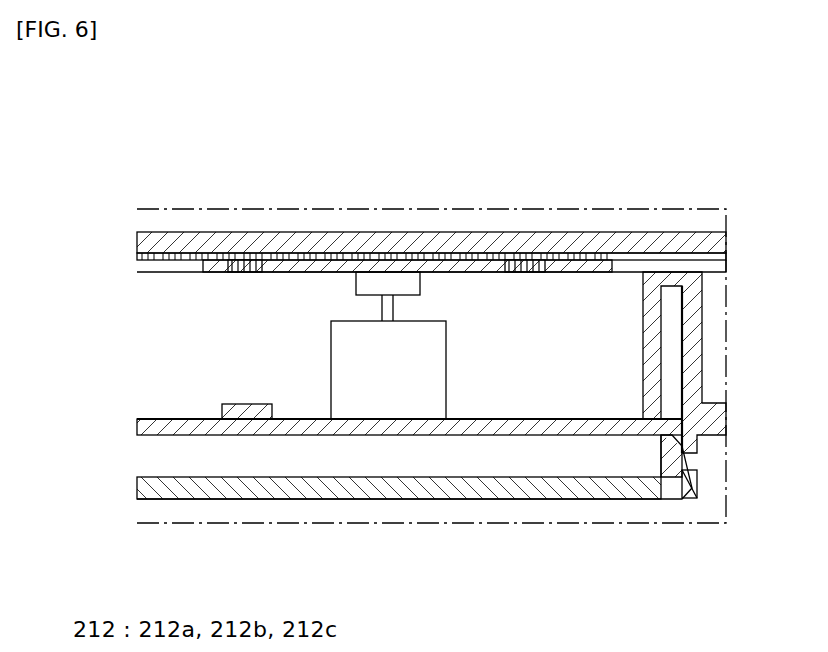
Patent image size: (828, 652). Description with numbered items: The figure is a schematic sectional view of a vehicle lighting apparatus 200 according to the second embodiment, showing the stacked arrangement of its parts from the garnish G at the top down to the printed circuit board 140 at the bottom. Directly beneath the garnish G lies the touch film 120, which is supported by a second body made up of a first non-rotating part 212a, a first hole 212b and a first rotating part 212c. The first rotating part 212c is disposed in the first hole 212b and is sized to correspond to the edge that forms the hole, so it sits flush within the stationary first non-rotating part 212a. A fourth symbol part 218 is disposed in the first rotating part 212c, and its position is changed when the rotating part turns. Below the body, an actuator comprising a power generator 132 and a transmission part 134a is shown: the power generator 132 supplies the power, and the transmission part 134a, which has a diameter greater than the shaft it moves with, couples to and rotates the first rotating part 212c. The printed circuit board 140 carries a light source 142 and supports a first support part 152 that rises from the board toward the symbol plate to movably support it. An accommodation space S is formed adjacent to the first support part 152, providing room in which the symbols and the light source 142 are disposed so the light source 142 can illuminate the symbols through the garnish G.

The vehicle lighting apparatus 200 is at (96, 109).
The first non-rotating part 212a is at (165, 238).
The first hole 212b is at (196, 256).
The first rotating part 212c is at (322, 266).
The fourth symbol part 218 is at (262, 266).
The garnish G is at (362, 243).
The touch film 120 is at (482, 256).
The transmission part 134a is at (406, 282).
The power generator 132 is at (388, 392).
The printed circuit board 140 is at (159, 419).
The light source 142 is at (242, 404).
The first support part 152 is at (670, 280).
The accommodation space S is at (532, 388).